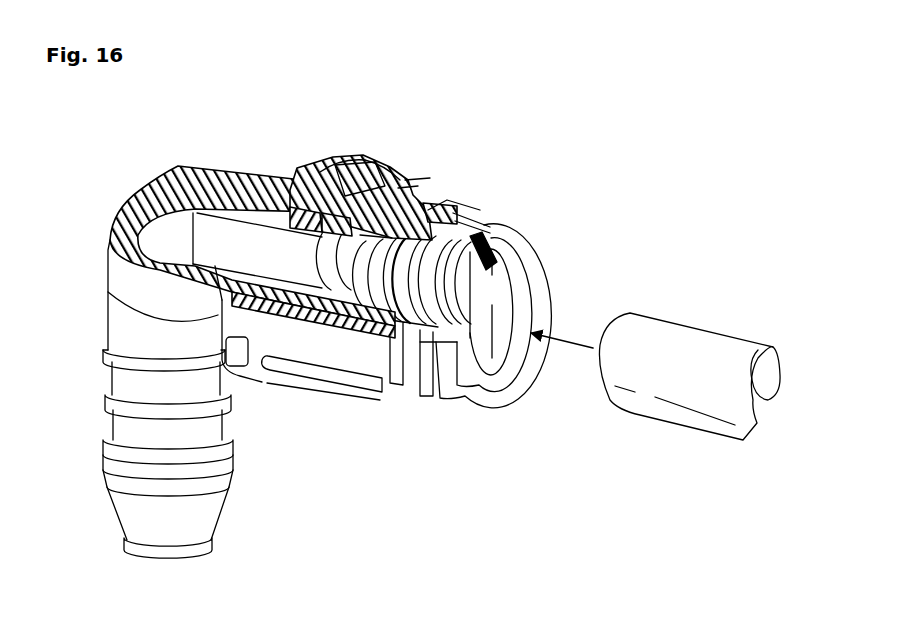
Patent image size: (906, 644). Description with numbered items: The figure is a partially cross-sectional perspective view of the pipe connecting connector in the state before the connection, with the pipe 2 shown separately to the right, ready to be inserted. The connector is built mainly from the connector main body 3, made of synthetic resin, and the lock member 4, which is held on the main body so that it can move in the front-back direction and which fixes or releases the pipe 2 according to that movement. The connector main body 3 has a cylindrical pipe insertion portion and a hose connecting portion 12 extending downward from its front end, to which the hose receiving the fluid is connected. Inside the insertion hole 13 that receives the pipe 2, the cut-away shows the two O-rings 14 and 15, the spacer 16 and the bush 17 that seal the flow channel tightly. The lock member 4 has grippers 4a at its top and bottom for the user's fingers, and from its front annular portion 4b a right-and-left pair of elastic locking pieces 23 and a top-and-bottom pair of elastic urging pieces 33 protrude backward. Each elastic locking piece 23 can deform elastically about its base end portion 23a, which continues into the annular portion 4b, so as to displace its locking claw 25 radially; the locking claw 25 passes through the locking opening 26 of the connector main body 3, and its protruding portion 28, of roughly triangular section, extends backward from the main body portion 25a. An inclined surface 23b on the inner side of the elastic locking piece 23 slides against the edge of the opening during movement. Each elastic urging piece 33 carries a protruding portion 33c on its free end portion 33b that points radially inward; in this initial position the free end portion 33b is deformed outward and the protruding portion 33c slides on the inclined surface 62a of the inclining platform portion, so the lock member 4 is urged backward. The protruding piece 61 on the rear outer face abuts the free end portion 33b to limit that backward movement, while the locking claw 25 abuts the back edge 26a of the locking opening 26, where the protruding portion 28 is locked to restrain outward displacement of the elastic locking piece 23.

The pipe 2 is at (702, 338).
The connector main body 3 is at (212, 158).
The lock member 4 is at (361, 155).
The grippers 4a is at (380, 168).
The annular portion 4b is at (150, 330).
The hose connecting portion 12 is at (210, 512).
The insertion hole 13 is at (535, 365).
The O-ring 14 is at (294, 200).
The O-ring 15 is at (339, 188).
The spacer 16 is at (321, 182).
The bush 17 is at (374, 200).
The elastic locking piece 23 is at (322, 362).
The base end portion 23a is at (258, 382).
The inclined surface 23b is at (373, 293).
The locking claw 25 is at (467, 300).
The main body portion 25a is at (535, 243).
The locking opening 26 is at (485, 238).
The back edge 26a is at (422, 362).
The protruding portion 28 is at (510, 292).
The elastic urging piece 33 is at (401, 180).
The free end portion 33b is at (428, 203).
The protruding portion 33c is at (458, 212).
The protruding piece 61 is at (458, 208).
The inclined surface 62a is at (426, 190).